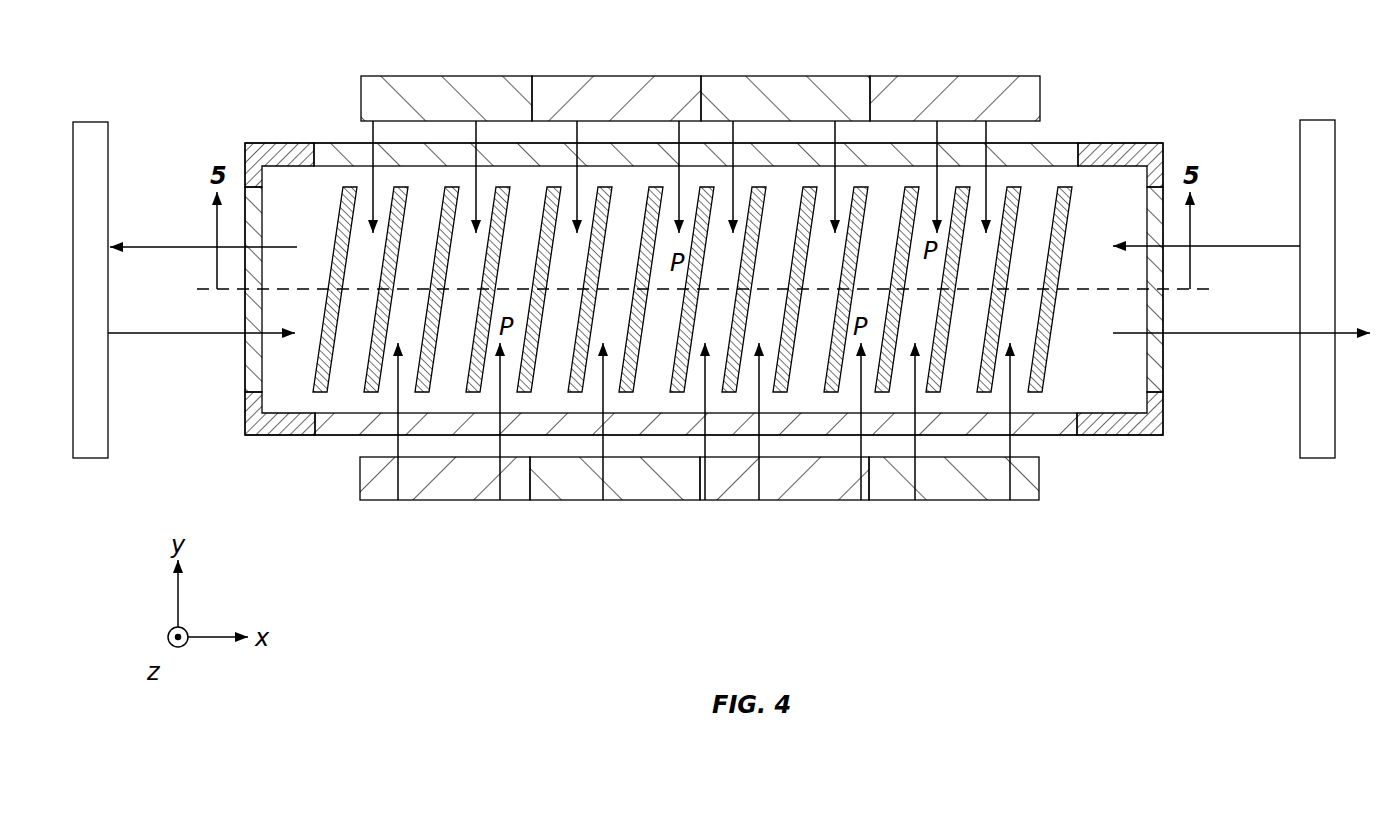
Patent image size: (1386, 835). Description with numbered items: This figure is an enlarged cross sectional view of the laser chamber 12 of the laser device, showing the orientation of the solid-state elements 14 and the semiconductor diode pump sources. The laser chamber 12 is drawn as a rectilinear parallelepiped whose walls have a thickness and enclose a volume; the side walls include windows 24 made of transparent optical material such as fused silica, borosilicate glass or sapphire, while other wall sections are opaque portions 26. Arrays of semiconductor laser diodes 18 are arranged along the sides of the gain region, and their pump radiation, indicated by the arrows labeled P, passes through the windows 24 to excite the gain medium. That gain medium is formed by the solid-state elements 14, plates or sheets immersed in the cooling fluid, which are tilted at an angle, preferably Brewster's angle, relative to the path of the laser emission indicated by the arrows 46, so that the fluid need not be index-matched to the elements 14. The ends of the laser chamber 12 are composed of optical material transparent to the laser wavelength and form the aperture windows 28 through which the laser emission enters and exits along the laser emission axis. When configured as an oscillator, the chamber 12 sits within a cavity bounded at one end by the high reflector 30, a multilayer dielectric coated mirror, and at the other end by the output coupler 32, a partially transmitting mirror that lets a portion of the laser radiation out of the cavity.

The laser chamber 12 is at (1100, 84).
The solid-state elements 14 is at (567, 380).
The semiconductor laser diodes 18 is at (600, 76).
The windows 24 is at (965, 150).
The opaque portions 26 is at (272, 143).
The aperture windows 28 is at (247, 367).
The high reflector 30 is at (92, 122).
The output coupler 32 is at (1318, 120).
The laser emission arrows 46 is at (142, 247).